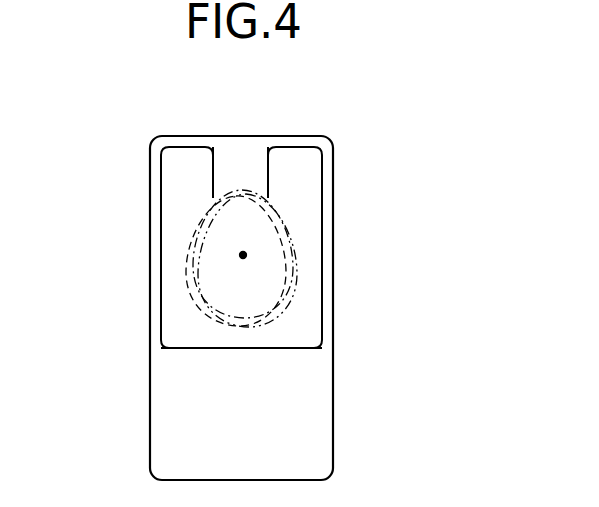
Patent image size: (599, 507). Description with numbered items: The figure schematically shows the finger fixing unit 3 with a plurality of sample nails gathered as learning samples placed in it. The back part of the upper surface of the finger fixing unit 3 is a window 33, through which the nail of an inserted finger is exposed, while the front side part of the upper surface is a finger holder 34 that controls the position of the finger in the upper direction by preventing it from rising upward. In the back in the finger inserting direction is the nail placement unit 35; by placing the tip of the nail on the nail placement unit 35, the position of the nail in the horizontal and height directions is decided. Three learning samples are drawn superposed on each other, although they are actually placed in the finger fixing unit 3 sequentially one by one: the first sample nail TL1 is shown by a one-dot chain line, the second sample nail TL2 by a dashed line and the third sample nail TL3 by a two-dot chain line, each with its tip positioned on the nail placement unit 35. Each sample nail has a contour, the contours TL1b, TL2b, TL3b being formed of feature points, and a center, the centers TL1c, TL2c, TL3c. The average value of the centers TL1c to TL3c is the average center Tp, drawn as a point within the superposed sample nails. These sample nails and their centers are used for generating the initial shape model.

The finger fixing unit 3 is at (300, 130).
The window 33 is at (310, 252).
The finger holder 34 is at (197, 412).
The nail placement unit 35 is at (238, 177).
The average center Tp is at (245, 254).
The sample nail TL1 is at (190, 256).
The contour TL1b is at (205, 235).
The center TL1c is at (240, 252).
The sample nail TL2 is at (193, 311).
The contour TL2b is at (183, 305).
The center TL2c is at (228, 262).
The sample nail TL3 is at (272, 326).
The contour TL3b is at (283, 312).
The center TL3c is at (246, 257).